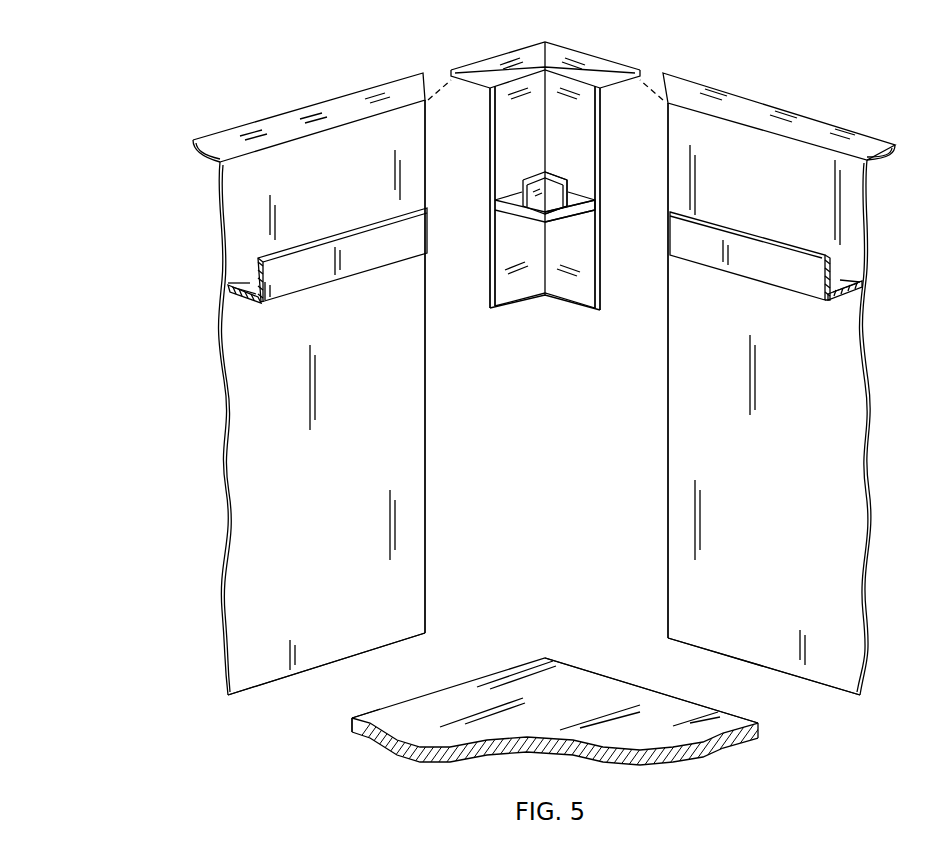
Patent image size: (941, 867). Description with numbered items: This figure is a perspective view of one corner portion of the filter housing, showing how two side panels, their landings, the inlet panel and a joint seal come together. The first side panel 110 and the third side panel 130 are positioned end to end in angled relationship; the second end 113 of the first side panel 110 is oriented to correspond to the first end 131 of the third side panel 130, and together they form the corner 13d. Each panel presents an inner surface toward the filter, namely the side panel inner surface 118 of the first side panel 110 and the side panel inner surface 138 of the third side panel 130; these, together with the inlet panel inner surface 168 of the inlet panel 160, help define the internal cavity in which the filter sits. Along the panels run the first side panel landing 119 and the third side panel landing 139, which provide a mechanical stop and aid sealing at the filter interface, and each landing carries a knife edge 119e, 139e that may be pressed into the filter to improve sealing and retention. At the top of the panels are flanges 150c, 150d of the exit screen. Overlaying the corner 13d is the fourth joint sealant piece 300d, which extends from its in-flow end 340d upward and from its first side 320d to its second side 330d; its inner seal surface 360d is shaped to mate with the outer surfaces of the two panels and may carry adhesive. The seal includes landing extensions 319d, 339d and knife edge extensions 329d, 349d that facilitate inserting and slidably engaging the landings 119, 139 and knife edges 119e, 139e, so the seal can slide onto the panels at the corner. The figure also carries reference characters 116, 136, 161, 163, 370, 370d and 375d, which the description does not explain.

The corner 13d is at (654, 36).
The first side panel 110 is at (862, 375).
The second end of first side panel 113 is at (668, 606).
The right wall bottom edge 116 is at (840, 697).
The side panel inner surface 118 is at (758, 330).
The first side panel landing 119 is at (850, 284).
The knife edge 119e is at (815, 262).
The third side panel 130 is at (272, 422).
The first end of third side panel 131 is at (432, 628).
The left wall bottom edge 136 is at (262, 695).
The side panel inner surface 138 is at (338, 330).
The third side panel landing 139 is at (232, 292).
The knife edge 139e is at (300, 267).
The flange 150c is at (330, 105).
The flange 150d is at (800, 118).
The inlet panel 160 is at (708, 732).
The base plate right edge 161 is at (712, 702).
The base plate left corner 163 is at (352, 716).
The inlet panel inner surface 168 is at (573, 712).
The fourth joint sealant piece 300d is at (524, 58).
The landing extension 319d is at (580, 198).
The first side of joint sealant piece 320d is at (603, 273).
The knife edge extension 329d is at (560, 225).
The second side of joint sealant piece 330d is at (490, 280).
The landing extension 339d is at (518, 200).
The in-flow end of joint sealant piece 340d is at (528, 305).
The knife edge extension 349d is at (532, 224).
The inner seal surface 360d is at (525, 97).
The connector cap 370 is at (520, 60).
The cap flange tip 370d is at (451, 72).
The connector side wall 375d is at (490, 152).